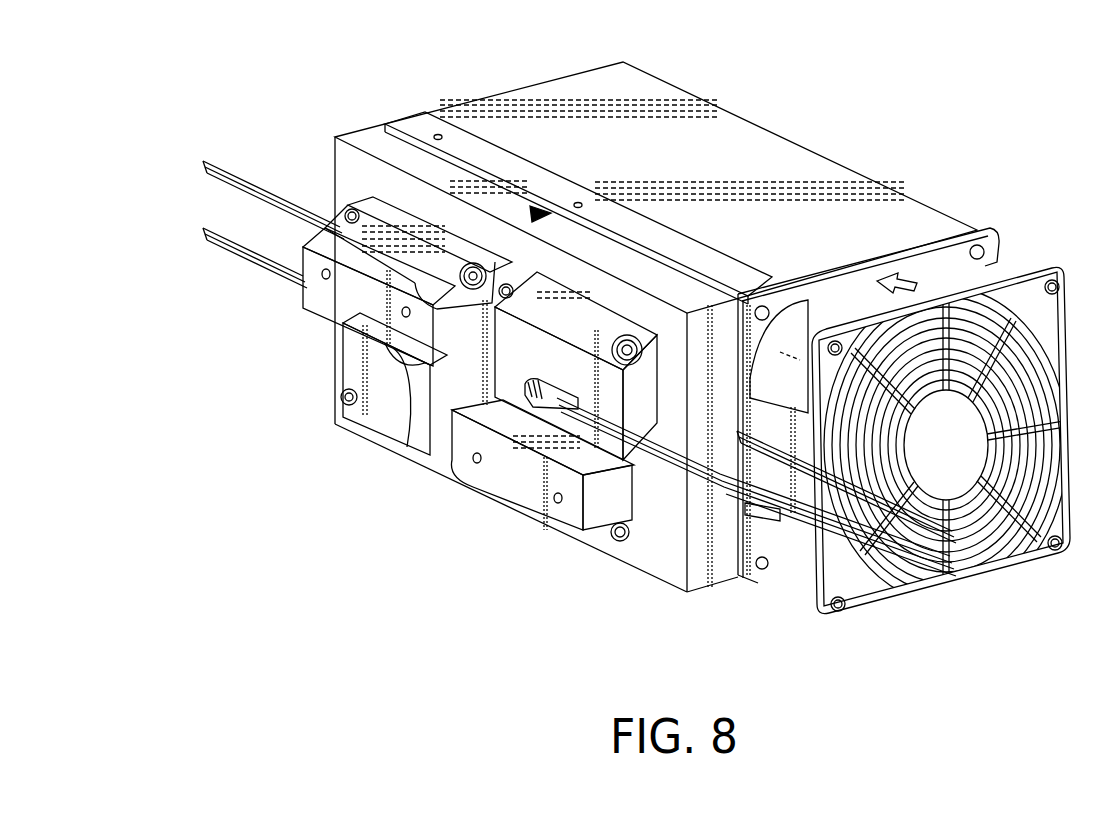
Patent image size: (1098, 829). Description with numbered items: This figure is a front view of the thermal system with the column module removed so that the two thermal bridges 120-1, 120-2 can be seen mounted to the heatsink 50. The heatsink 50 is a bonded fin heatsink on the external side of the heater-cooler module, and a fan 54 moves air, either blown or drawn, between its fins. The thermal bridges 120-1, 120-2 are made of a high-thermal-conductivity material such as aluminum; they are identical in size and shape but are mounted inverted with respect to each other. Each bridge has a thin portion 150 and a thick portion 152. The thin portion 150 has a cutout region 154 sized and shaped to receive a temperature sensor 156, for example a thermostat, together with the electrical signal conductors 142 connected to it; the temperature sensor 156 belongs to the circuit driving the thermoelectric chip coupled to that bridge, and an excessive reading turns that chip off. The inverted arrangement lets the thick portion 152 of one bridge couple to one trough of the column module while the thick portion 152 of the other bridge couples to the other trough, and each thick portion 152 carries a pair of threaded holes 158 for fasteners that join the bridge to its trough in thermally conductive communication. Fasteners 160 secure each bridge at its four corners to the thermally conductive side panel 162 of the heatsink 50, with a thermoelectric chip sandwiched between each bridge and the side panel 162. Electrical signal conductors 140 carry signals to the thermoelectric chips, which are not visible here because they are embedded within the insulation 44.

The insulation 44 is at (698, 563).
The heatsink 50 is at (727, 160).
The fan 54 is at (913, 272).
The thermal bridge 120-1 is at (397, 185).
The thermal bridge 120-2 is at (603, 300).
The electrical signal conductors 140 is at (202, 176).
The electrical signal conductors 142 is at (245, 272).
The thin portion 150 is at (562, 356).
The thick portion 152 is at (381, 291).
The cutout region 154 is at (410, 450).
The temperature sensor 156 is at (555, 407).
The threaded holes 158 is at (403, 313).
The fasteners 160 is at (470, 270).
The side panel 162 is at (540, 212).